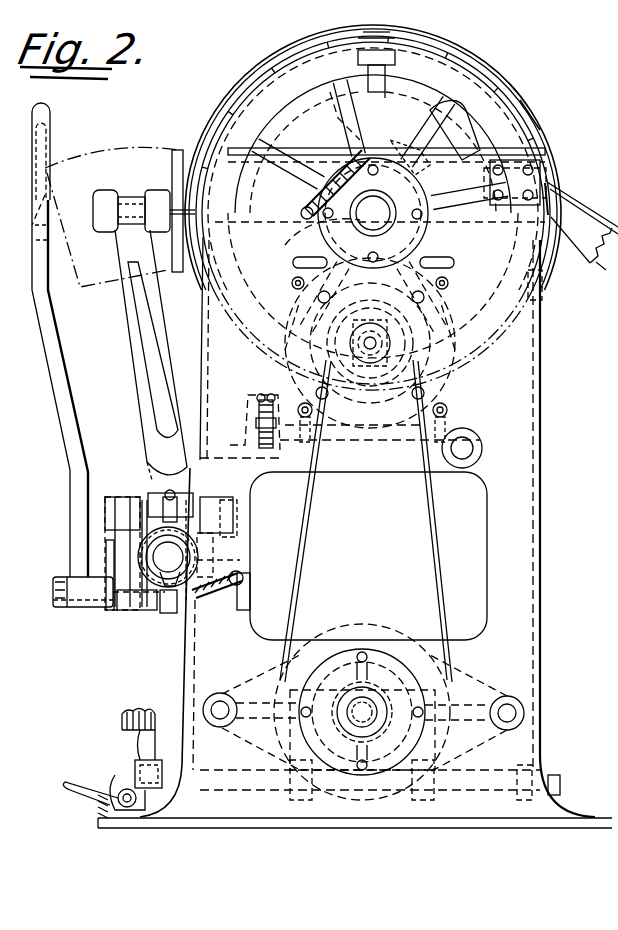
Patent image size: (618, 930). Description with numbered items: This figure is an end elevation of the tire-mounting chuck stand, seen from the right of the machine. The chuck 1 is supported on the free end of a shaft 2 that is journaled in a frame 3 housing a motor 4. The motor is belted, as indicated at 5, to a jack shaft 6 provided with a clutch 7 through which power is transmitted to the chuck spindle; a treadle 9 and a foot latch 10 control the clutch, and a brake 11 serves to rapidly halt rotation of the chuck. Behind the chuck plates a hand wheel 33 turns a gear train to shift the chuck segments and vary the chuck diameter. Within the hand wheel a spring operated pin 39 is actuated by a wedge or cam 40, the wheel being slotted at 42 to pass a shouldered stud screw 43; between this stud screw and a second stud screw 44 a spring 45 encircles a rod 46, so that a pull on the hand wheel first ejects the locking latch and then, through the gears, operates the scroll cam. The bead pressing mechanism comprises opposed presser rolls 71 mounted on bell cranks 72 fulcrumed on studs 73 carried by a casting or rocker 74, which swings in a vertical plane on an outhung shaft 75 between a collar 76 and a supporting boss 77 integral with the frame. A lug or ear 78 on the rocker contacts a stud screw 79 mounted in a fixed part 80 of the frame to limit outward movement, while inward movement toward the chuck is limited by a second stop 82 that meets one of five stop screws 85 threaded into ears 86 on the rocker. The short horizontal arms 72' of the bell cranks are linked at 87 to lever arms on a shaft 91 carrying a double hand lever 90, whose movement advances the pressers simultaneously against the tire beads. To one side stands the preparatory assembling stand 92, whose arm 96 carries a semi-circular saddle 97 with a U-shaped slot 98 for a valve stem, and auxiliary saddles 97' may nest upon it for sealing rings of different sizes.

The chuck 1 is at (548, 250).
The shaft 2 is at (383, 218).
The frame 3 is at (540, 365).
The motor 4 is at (433, 385).
The belt 5 is at (436, 525).
The jack shaft 6 is at (362, 712).
The clutch 7 is at (455, 748).
The treadle 9 is at (120, 725).
The foot latch 10 is at (128, 765).
The brake 11 is at (480, 670).
The hand wheel 33 is at (535, 301).
The spring operated pin 39 is at (435, 180).
The wedge or cam 40 is at (455, 130).
The slot 42 is at (348, 116).
The shouldered stud screw 43 is at (392, 101).
The second stud screw 44 is at (310, 238).
The spring 45 is at (312, 186).
The rod 46 is at (408, 145).
The presser rolls 71 is at (172, 152).
The bell cranks 72 is at (109, 388).
The short substantially horizontal arms 72' is at (119, 454).
The studs 73 is at (150, 490).
The casting or rocker 74 is at (160, 520).
The outhung shaft 75 is at (165, 590).
The collar 76 is at (130, 612).
The supporting boss 77 is at (225, 562).
The lug or ear 78 is at (168, 614).
The stud screw 79 is at (186, 615).
The fixed part of the frame 80 is at (205, 605).
The second stop 82 is at (145, 553).
The stop screws 85 is at (110, 600).
The ears 86 is at (110, 580).
The links 87 is at (120, 522).
The double hand lever 90 is at (46, 118).
The shaft 91 is at (75, 612).
The preparatory assembling stand 92 is at (578, 218).
The arm 96 is at (607, 272).
The saddle 97 is at (575, 180).
The auxiliary saddles 97' is at (551, 112).
The U-shaped slot 98 is at (470, 50).